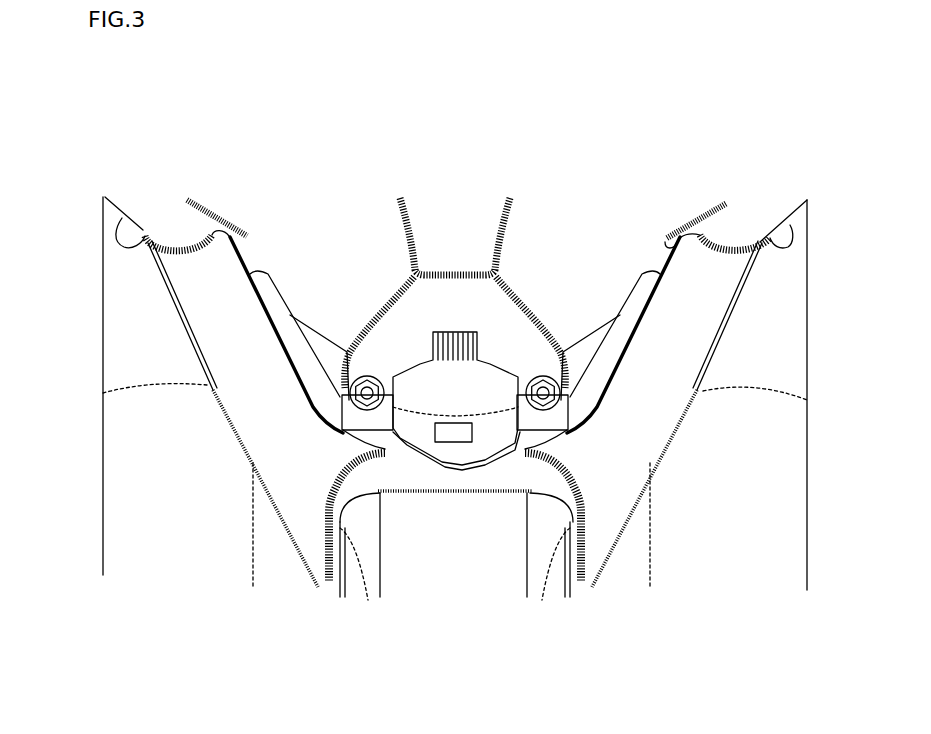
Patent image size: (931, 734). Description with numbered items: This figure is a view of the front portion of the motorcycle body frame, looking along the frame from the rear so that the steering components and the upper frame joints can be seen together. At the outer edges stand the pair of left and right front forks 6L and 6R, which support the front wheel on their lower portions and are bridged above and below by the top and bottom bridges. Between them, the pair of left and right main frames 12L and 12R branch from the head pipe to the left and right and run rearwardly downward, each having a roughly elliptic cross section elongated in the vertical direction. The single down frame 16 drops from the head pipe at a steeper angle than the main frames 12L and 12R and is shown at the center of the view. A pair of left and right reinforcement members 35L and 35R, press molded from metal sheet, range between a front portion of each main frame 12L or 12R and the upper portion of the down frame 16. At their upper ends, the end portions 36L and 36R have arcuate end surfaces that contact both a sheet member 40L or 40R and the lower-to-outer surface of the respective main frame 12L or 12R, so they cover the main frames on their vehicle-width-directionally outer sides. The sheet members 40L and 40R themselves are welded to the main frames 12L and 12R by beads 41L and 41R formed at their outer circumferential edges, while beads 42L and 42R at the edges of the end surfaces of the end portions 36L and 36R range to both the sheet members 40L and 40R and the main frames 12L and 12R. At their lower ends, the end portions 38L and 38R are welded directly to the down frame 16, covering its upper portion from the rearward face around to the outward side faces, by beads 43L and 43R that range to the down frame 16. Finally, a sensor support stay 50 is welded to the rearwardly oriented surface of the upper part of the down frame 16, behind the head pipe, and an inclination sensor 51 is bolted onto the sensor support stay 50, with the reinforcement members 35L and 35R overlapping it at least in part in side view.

The left front fork 6L is at (107, 522).
The right front fork 6R is at (810, 553).
The left main frame 12L is at (330, 226).
The right main frame 12R is at (623, 226).
The down frame 16 is at (503, 343).
The left reinforcement member 35L is at (237, 443).
The right reinforcement member 35R is at (673, 450).
The end portion of left reinforcement member 36L is at (183, 257).
The end portion of right reinforcement member 36R is at (730, 260).
The end portion of left reinforcement member 38L is at (317, 508).
The end portion of right reinforcement member 38R is at (593, 510).
The left sheet member 40L is at (205, 210).
The right sheet member 40R is at (710, 212).
The bead 41L is at (229, 232).
The bead 41R is at (690, 230).
The bead 42L is at (121, 217).
The bead 42R is at (790, 222).
The bead 43L is at (363, 560).
The bead 43R is at (563, 567).
The sensor support stay 50 is at (543, 430).
The inclination sensor 51 is at (448, 387).